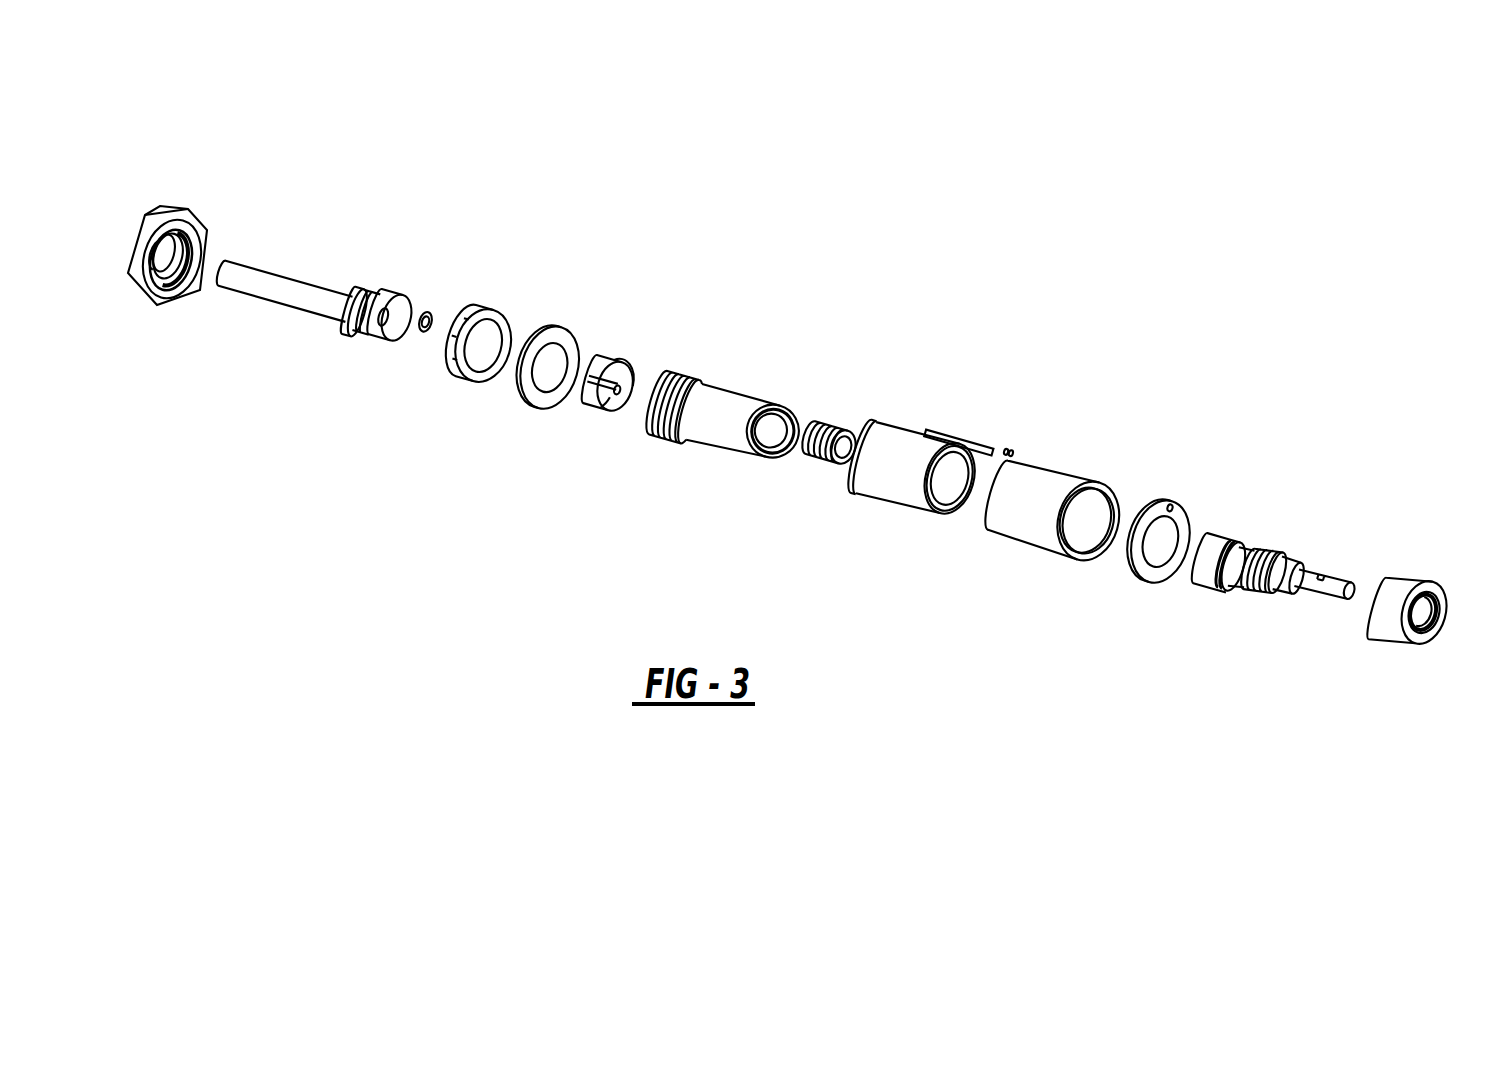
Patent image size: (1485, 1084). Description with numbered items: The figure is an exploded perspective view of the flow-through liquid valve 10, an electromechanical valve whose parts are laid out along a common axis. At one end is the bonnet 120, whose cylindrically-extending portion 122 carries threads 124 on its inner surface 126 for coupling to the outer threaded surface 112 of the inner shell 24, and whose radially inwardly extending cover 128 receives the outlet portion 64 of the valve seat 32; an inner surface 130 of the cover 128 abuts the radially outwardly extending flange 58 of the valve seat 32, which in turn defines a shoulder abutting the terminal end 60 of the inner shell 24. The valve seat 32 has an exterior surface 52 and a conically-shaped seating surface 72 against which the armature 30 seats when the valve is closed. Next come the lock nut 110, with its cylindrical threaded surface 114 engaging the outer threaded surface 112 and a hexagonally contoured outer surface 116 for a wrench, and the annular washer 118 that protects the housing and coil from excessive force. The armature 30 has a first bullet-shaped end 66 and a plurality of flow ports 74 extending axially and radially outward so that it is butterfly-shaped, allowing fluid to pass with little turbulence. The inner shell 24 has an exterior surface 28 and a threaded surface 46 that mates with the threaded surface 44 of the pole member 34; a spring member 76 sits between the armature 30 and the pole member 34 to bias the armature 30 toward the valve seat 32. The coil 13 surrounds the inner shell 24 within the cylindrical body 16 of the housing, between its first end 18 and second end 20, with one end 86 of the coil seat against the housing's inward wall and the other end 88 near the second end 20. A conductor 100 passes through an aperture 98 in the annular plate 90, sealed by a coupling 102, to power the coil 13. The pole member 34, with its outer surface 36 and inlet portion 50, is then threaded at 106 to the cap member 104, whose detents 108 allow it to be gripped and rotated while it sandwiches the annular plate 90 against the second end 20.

The flow-through liquid valve 10 is at (1012, 172).
The coil 13 is at (912, 471).
The cylindrical body 16 is at (1079, 511).
The first end 18 is at (1023, 465).
The second end 20 is at (1107, 482).
The inner shell 24 is at (722, 398).
The exterior surface 28 is at (740, 400).
The armature 30 is at (609, 367).
The valve seat 32 is at (329, 314).
The pole member 34 is at (1272, 575).
The outer surface 36 is at (1215, 540).
The threaded surface 44 is at (1272, 598).
The threaded surface 46 is at (783, 456).
The inlet portion 50 is at (1316, 578).
The exterior surface 52 is at (372, 282).
The radially outwardly extending flange 58 is at (363, 284).
The terminal end 60 is at (683, 374).
The outlet portion 64 is at (286, 292).
The first bullet-shaped end 66 is at (637, 380).
The conically-shaped seating surface 72 is at (393, 332).
The flow ports 74 is at (624, 366).
The spring member 76 is at (833, 413).
The end 86 is at (878, 428).
The end 88 is at (947, 506).
The annular plate 90 is at (1176, 546).
The aperture 98 is at (1166, 506).
The conductor 100 is at (975, 444).
The coupling 102 is at (1008, 452).
The cap member 104 is at (1374, 627).
The threaded engagement 106 is at (1433, 638).
The detents 108 is at (1423, 583).
The lock nut 110 is at (482, 330).
The outer threaded surface 112 is at (662, 438).
The cylindrical threaded surface 114 is at (493, 367).
The hexagonally contoured outer surface 116 is at (474, 307).
The annular washer 118 is at (556, 333).
The bonnet 120 is at (219, 245).
The cylindrically-extending portion 122 is at (186, 230).
The threads 124 is at (180, 282).
The inner surface 126 is at (213, 250).
The radially inwardly extending cover 128 is at (134, 234).
The inner surface 130 is at (208, 245).